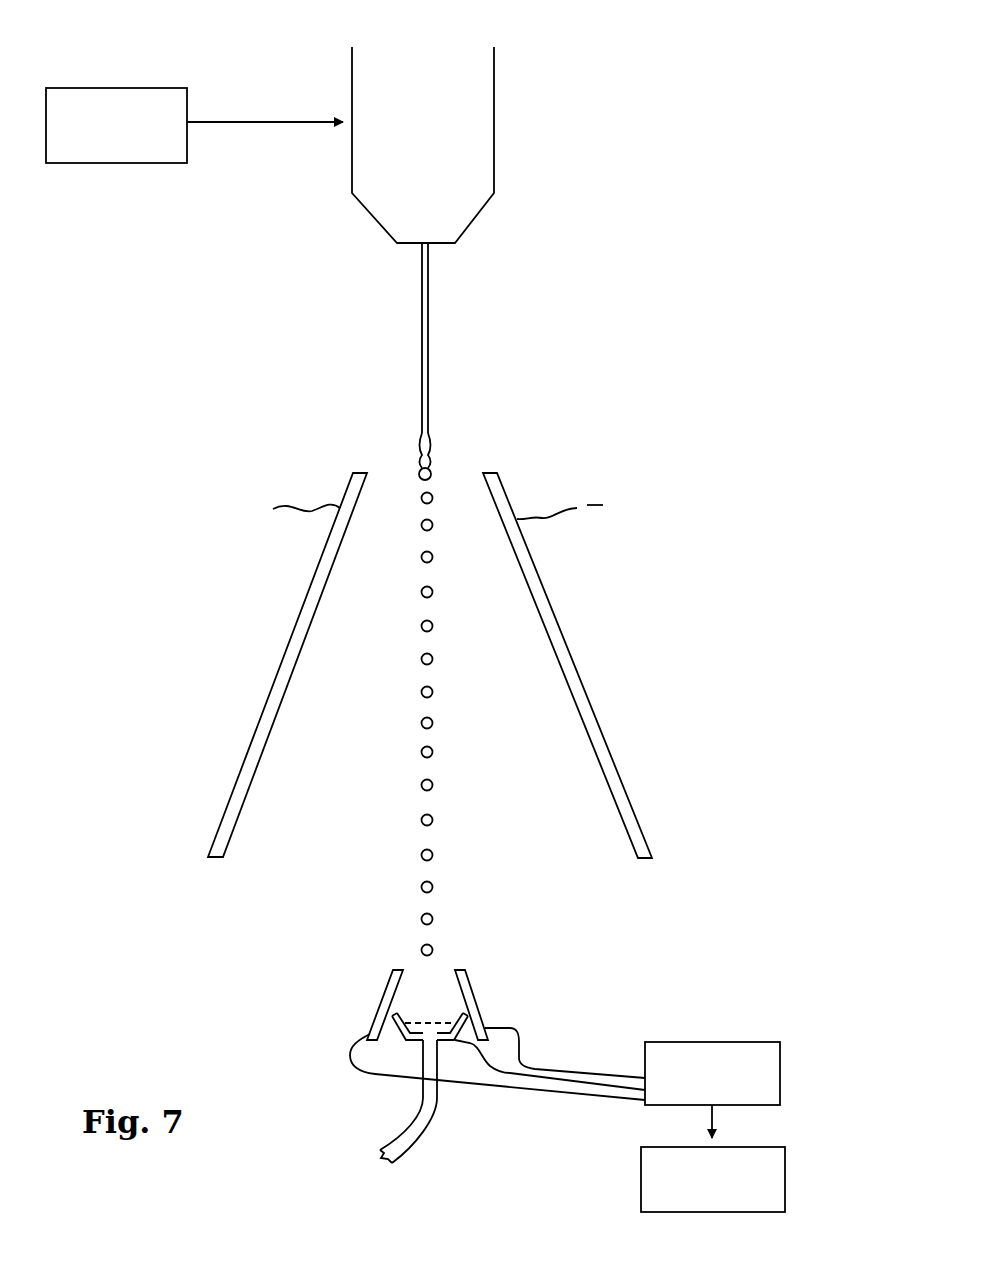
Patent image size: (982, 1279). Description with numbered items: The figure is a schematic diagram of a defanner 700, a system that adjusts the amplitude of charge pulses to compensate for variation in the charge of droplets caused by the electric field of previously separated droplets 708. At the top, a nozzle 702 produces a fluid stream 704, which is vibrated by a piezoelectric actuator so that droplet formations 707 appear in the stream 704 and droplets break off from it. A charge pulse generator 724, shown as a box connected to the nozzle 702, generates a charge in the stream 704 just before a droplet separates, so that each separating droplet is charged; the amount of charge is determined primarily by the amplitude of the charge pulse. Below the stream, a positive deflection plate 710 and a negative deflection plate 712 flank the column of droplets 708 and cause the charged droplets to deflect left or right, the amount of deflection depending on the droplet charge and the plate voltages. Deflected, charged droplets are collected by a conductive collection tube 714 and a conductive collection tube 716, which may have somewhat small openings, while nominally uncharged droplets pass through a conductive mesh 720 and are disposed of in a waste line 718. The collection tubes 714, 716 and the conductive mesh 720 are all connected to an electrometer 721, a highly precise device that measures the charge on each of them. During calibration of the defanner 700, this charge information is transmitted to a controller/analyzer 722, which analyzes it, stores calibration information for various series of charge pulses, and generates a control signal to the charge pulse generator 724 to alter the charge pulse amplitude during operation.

The defanner 700 is at (670, 52).
The nozzle 702 is at (494, 133).
The stream 704 is at (430, 293).
The droplet formations 707 is at (440, 446).
The droplets 708 is at (472, 852).
The positive deflection plate 710 is at (313, 583).
The negative deflection plate 712 is at (542, 580).
The conductive collection tube 714 is at (388, 997).
The conductive collection tube 716 is at (477, 993).
The waste line 718 is at (431, 1123).
The conductive mesh 720 is at (431, 1008).
The electrometer 721 is at (757, 1041).
The controller/analyzer 722 is at (786, 1182).
The charge pulse generator 724 is at (115, 87).